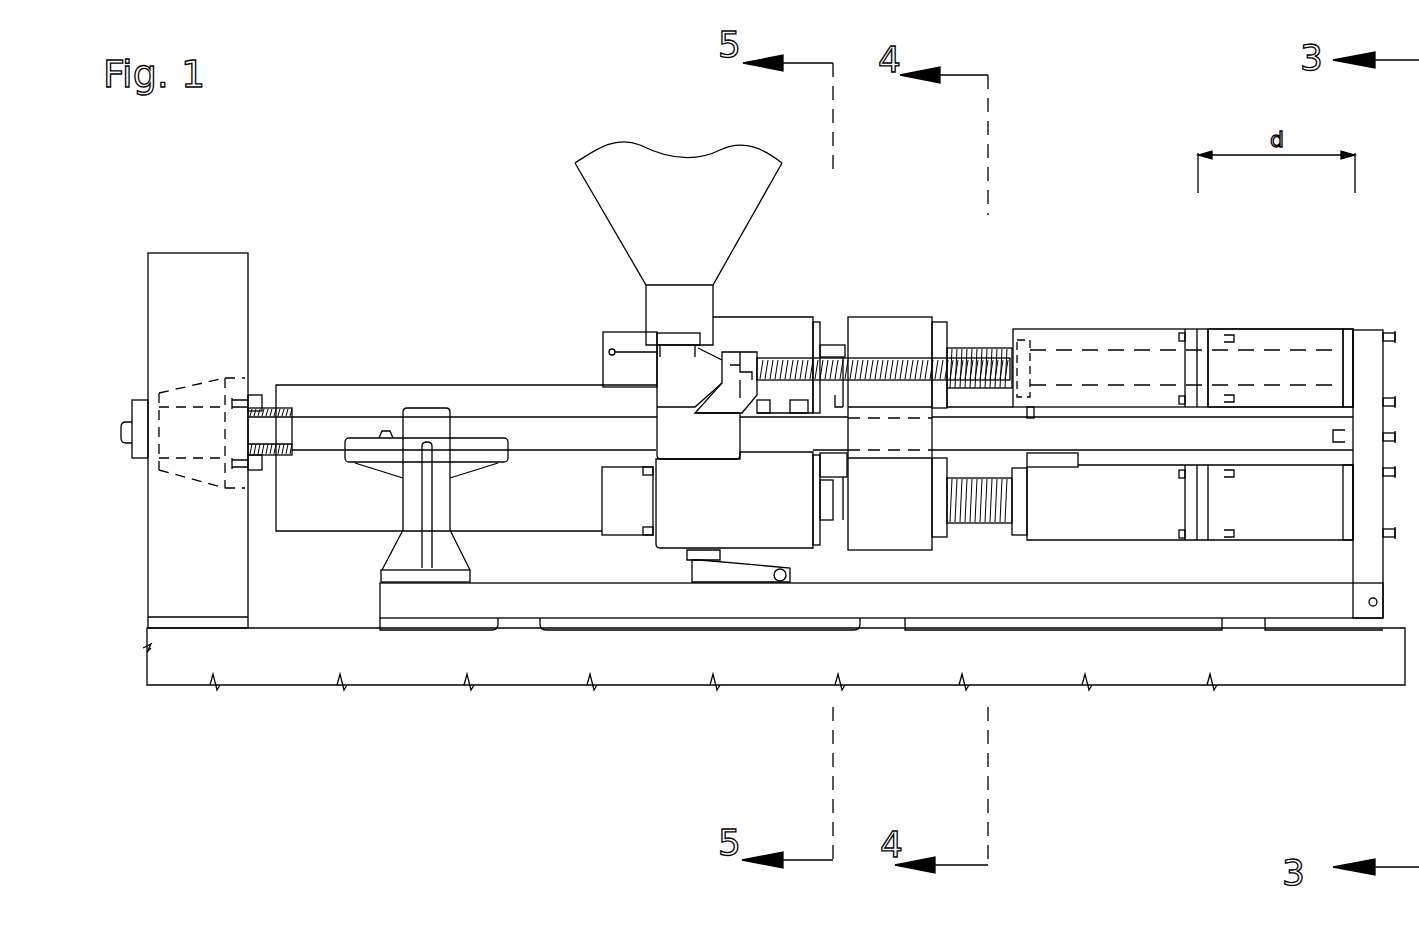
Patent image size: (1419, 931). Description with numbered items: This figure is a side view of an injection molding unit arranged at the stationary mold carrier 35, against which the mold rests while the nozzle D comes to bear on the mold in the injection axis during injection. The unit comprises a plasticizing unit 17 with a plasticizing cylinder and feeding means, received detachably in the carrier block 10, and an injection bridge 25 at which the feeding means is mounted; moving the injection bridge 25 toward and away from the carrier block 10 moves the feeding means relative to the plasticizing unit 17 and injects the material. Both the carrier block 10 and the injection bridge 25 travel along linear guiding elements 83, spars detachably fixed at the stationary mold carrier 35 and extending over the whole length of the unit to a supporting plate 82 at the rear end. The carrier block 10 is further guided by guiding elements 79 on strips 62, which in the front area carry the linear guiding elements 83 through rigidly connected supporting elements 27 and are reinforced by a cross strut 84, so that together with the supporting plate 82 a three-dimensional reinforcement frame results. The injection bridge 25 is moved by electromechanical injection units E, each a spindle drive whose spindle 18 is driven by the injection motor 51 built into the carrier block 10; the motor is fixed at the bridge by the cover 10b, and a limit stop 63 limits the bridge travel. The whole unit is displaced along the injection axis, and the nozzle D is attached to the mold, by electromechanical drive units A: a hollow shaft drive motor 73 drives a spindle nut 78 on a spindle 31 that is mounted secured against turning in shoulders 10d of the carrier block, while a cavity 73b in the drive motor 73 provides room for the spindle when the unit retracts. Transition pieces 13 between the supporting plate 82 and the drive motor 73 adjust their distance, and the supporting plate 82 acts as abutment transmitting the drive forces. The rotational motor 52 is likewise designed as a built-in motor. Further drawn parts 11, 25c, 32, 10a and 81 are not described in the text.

The stationary mold carrier 35 is at (199, 275).
The nozzle D is at (134, 410).
The linear guiding elements 83 is at (314, 430).
The supporting elements 27 is at (428, 418).
The injection motor 51 is at (608, 372).
The plasticizing unit 17 is at (534, 514).
The carrier block 10 is at (705, 509).
The shoulders of the carrier block 10d is at (744, 352).
The cover 10b is at (816, 330).
The electromechanical injection units E is at (857, 310).
The spindle 31 is at (894, 358).
The injection bridge 25 is at (884, 512).
The flange 11 is at (946, 325).
The coupling 25c is at (966, 400).
The spindle 18 is at (978, 518).
The limit stop 63 is at (1018, 525).
The rotational motor 52 is at (1057, 458).
The drive motor 73 is at (1140, 345).
The spindle nut 78 is at (1071, 335).
The cavity 73b is at (1171, 335).
The transition pieces 13 is at (1268, 338).
The supporting plate 82 is at (1368, 355).
The piston rod 32 is at (1093, 367).
The cylinder body 10a is at (795, 518).
The guiding elements 79 is at (737, 568).
The strips 62 is at (545, 598).
The cross strut 84 is at (465, 617).
The machine base 81 is at (1220, 660).
The electromechanical drive units A is at (1130, 558).